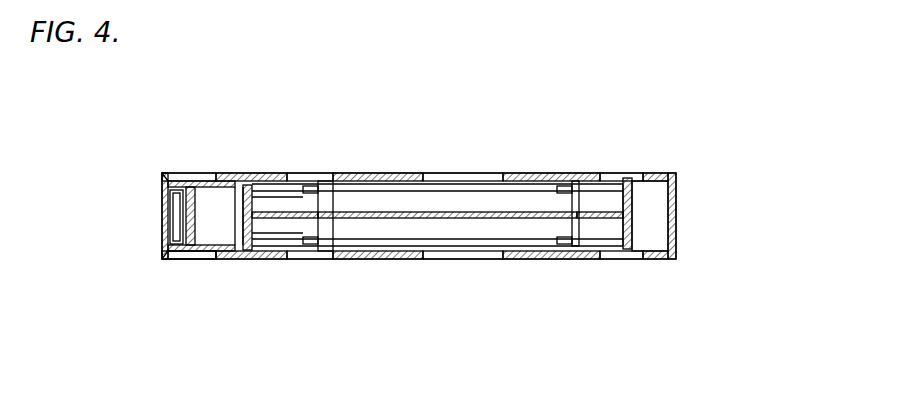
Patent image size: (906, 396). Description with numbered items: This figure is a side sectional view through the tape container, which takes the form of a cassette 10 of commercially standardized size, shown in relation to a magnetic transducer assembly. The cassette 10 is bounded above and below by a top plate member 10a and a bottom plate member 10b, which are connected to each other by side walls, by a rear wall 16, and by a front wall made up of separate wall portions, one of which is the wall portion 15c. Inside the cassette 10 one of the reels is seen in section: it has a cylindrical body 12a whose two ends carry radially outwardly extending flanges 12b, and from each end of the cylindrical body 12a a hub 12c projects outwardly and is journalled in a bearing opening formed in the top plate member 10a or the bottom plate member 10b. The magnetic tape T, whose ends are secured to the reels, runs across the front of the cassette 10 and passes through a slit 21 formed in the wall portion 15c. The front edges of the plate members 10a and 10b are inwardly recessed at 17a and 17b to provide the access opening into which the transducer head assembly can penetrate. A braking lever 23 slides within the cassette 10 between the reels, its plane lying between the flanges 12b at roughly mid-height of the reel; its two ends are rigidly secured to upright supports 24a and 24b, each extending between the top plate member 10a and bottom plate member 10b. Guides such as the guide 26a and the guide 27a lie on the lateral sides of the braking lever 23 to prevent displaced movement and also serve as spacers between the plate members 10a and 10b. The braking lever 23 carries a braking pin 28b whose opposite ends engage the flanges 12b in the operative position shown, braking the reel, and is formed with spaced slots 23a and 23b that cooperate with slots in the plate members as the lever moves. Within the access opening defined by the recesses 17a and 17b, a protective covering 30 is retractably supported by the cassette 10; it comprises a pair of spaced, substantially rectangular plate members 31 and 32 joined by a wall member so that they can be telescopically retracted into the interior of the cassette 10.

The cassette 10 is at (610, 168).
The top plate member 10a is at (660, 172).
The bottom plate member 10b is at (658, 260).
The cylindrical body 12a is at (463, 203).
The flanges 12b is at (383, 180).
The hub 12c is at (451, 177).
The front wall portion 15c is at (162, 232).
The rear wall 16 is at (677, 212).
The inward recess 17a is at (207, 180).
The inward recess 17b is at (210, 258).
The slit 21 is at (176, 222).
The magnetic tape T is at (182, 203).
The braking lever 23 is at (546, 211).
The slot 23a is at (613, 218).
The slot 23b is at (296, 220).
The upright support 24a is at (250, 243).
The upright support 24b is at (633, 227).
The guide 26a is at (656, 193).
The guide 27a is at (330, 182).
The braking pin 28b is at (578, 198).
The protective covering 30 is at (178, 170).
The plate member 31 is at (192, 181).
The plate member 32 is at (186, 259).